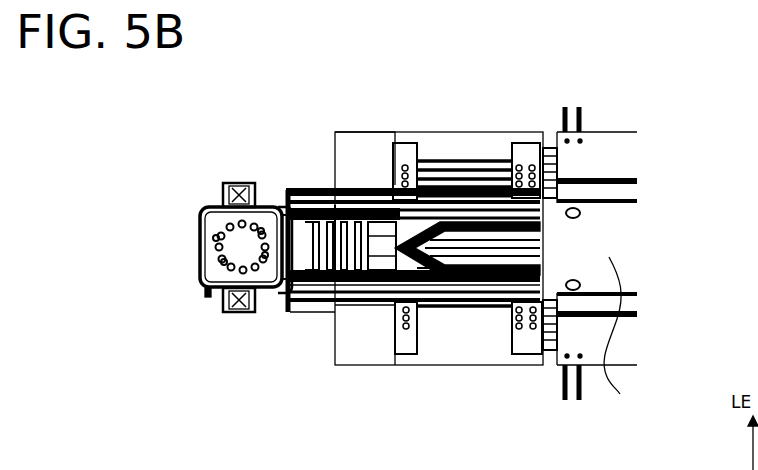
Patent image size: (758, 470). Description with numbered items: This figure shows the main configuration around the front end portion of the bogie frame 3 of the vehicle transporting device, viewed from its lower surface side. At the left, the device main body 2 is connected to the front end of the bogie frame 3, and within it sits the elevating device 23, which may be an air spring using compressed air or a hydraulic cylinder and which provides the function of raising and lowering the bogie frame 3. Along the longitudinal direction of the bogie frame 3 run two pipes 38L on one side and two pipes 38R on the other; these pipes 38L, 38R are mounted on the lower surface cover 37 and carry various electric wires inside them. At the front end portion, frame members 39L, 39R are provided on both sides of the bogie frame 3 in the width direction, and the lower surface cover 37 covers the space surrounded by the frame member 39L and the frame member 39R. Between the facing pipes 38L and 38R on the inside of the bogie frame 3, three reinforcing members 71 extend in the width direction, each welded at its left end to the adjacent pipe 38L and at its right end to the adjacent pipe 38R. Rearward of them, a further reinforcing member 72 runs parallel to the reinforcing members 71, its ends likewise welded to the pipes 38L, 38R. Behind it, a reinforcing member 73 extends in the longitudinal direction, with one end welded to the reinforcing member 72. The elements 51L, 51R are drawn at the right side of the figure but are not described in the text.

The device main body 2 is at (220, 141).
The bogie frame 3 is at (443, 73).
The elevating device 23 is at (208, 206).
The lower surface cover 37 is at (619, 394).
The pipes 38L is at (487, 217).
The pipes 38R is at (433, 280).
The frame member 39L is at (333, 187).
The frame member 39R is at (343, 305).
The left pipe 51L is at (560, 108).
The right pipe 51R is at (562, 399).
The reinforcing members 71 is at (328, 265).
The reinforcing member 72 is at (365, 222).
The reinforcing member 73 is at (393, 234).